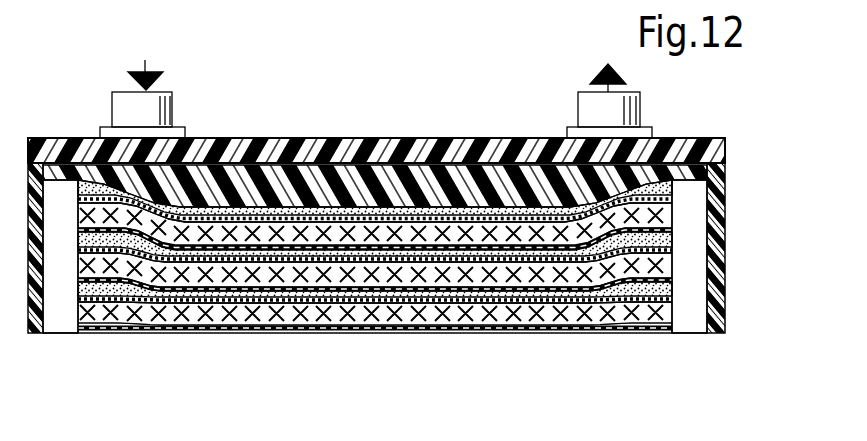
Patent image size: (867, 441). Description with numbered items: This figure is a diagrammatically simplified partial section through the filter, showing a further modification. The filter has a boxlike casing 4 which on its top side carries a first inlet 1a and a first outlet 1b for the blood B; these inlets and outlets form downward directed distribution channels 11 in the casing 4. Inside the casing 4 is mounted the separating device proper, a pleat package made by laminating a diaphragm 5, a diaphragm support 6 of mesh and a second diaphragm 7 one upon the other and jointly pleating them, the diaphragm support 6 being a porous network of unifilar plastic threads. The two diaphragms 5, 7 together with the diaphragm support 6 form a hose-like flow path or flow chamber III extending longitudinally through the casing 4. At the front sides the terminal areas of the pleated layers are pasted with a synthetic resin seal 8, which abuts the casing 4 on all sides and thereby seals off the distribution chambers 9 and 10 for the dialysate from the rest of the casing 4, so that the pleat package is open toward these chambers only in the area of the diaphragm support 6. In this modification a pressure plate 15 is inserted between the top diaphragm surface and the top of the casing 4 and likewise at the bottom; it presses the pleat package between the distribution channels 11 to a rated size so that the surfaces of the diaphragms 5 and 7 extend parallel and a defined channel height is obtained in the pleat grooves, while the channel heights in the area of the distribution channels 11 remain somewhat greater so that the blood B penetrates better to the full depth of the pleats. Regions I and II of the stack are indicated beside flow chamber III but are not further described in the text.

The first inlet 1a is at (173, 118).
The first outlet 1b is at (579, 112).
The boxlike casing 4 is at (243, 148).
The diaphragm 5 is at (308, 218).
The diaphragm support 6 is at (375, 231).
The diaphragm 7 is at (405, 248).
The synthetic resin plastic seal 8 is at (80, 183).
The distribution chamber 9 is at (62, 307).
The distribution chamber 10 is at (690, 322).
The distribution channels 11 is at (150, 238).
The pressure plate 15 is at (440, 173).
The first cell I is at (225, 250).
The second cell II is at (263, 292).
The flow chamber III is at (289, 272).
The blood B is at (377, 64).